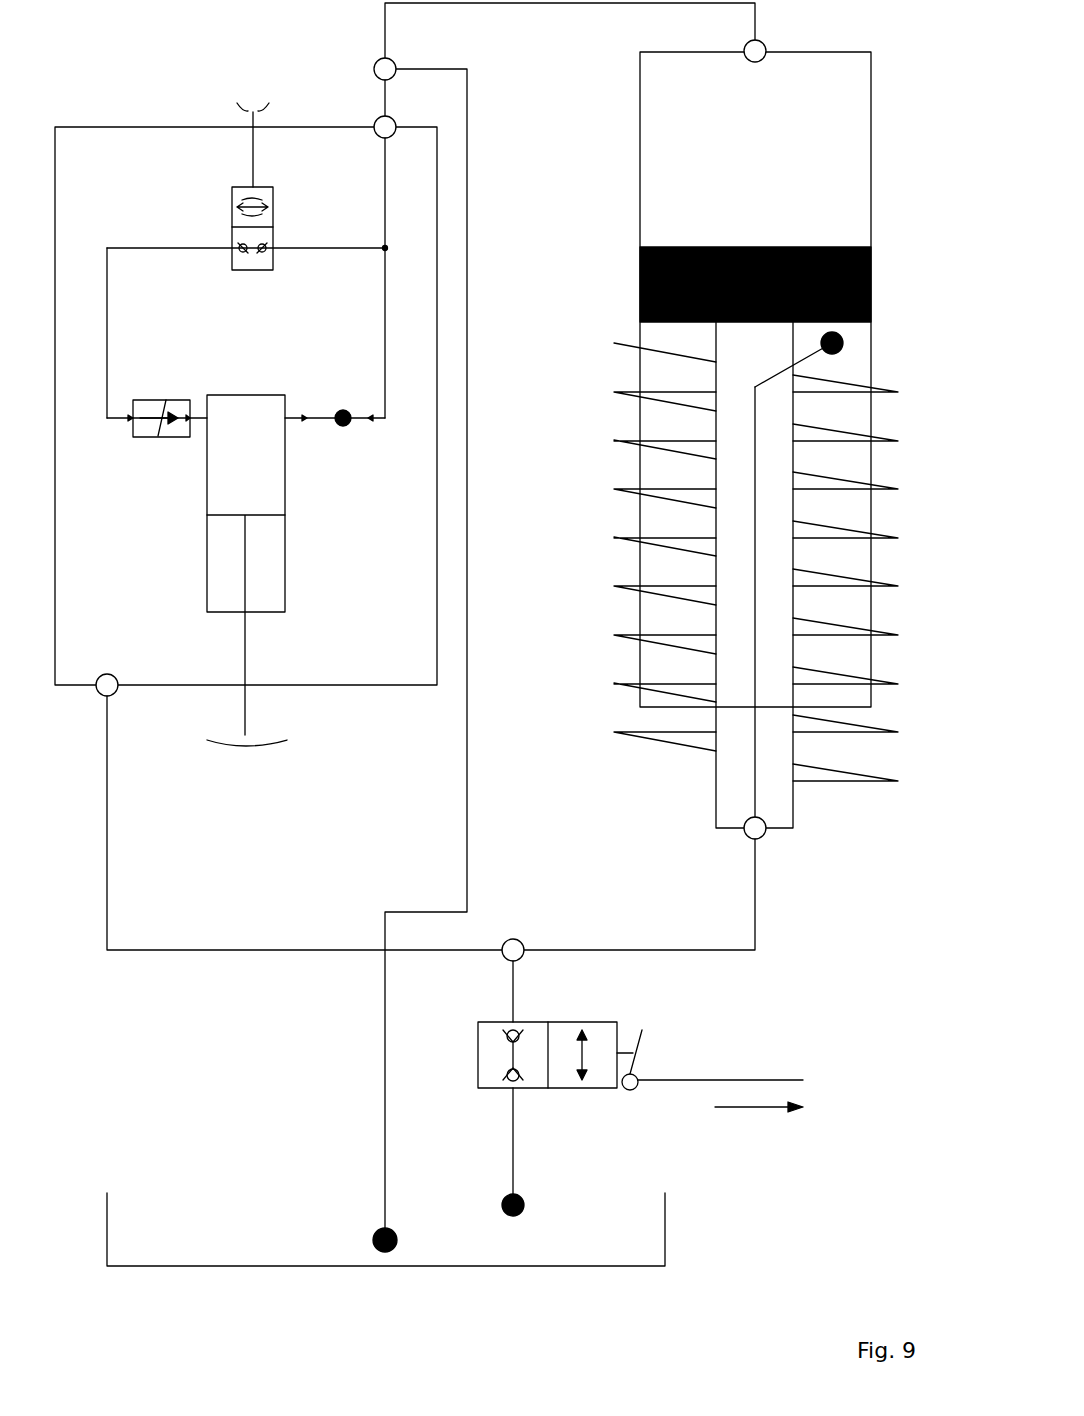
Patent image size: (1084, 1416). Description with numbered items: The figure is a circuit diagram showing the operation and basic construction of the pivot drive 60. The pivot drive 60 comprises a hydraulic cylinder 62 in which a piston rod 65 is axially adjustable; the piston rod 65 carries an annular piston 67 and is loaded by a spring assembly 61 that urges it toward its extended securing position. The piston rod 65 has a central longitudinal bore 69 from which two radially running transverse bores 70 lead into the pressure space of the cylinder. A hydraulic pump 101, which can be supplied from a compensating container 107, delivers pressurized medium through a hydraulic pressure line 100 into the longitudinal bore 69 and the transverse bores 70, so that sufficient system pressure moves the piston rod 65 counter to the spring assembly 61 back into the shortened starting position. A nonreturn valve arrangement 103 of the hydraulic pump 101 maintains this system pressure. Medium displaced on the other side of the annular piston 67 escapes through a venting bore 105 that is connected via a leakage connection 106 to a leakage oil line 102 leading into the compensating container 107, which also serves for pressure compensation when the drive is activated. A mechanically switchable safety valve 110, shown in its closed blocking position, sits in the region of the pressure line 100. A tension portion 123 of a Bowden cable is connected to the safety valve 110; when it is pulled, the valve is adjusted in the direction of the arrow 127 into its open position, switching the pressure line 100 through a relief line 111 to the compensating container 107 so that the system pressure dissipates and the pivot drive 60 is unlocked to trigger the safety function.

The pivot drive 60 is at (630, 168).
The spring assembly 61 is at (623, 642).
The hydraulic cylinder 62 is at (873, 142).
The piston rod 65 is at (783, 745).
The annular piston 67 is at (638, 287).
The longitudinal bore 69 is at (755, 433).
The transverse bores 70 is at (845, 343).
The hydraulic pressure line 100 is at (717, 950).
The hydraulic pump 101 is at (353, 668).
The leakage oil line 102 is at (468, 382).
The nonreturn valve arrangement 103 is at (320, 410).
The venting bore 105 is at (758, 18).
The leakage connection 106 is at (745, 46).
The compensating container 107 is at (647, 1250).
The safety valve 110 is at (490, 1063).
The relief line 111 is at (513, 1145).
The tension portion 123 is at (760, 1080).
The arrow 127 is at (743, 1108).